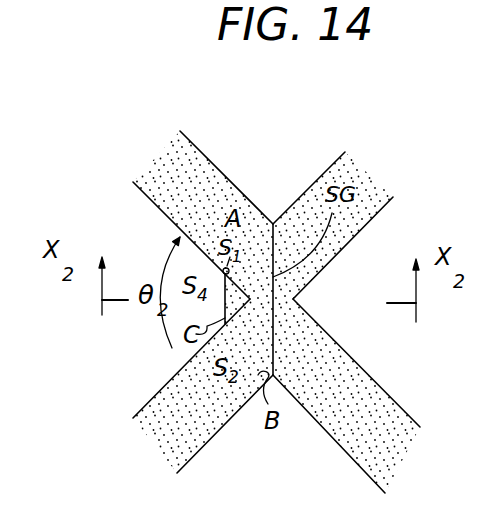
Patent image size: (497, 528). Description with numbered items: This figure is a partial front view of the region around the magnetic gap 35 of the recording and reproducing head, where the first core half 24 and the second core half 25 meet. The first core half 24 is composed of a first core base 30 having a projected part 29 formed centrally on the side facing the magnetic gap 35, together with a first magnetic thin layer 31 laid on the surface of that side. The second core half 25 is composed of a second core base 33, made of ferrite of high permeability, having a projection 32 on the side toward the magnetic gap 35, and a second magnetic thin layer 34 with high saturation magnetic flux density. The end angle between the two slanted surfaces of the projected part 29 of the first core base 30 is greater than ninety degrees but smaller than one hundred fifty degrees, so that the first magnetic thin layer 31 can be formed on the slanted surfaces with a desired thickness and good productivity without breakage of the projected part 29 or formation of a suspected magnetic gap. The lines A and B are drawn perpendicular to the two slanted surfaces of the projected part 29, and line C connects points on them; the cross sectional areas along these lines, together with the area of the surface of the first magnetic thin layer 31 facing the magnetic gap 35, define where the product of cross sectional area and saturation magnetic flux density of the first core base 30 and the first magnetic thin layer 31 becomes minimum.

The first core half 24 is at (120, 210).
The second core half 25 is at (408, 202).
The projected part 29 is at (225, 300).
The first core base 30 is at (140, 392).
The first magnetic thin layer 31 is at (208, 418).
The projection 32 is at (297, 300).
The second core base 33 is at (400, 393).
The second magnetic thin layer 34 is at (342, 415).
The magnetic gap 35 is at (273, 250).